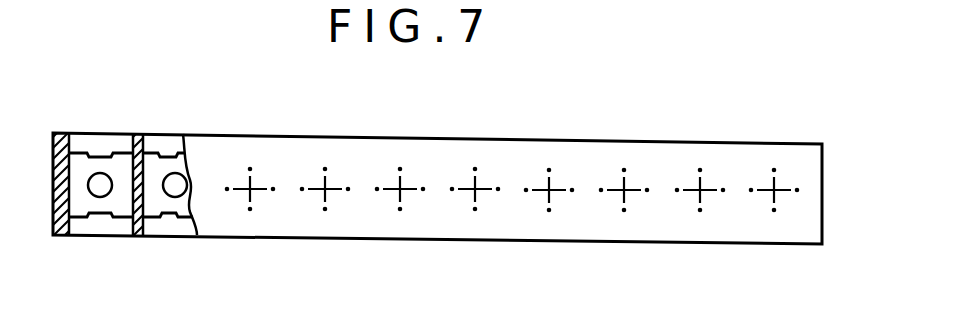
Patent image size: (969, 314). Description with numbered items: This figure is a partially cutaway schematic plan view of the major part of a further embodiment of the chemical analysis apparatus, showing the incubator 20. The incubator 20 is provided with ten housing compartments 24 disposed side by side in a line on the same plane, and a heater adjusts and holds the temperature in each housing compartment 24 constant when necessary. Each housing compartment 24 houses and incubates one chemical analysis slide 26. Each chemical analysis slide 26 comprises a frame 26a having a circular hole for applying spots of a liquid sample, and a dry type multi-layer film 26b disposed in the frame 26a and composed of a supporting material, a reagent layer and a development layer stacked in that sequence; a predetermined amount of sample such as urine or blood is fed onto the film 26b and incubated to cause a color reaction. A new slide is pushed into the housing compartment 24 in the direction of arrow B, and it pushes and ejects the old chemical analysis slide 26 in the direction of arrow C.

The incubator 20 is at (255, 125).
The housing compartment 24 is at (159, 145).
The chemical analysis slide 26 is at (85, 138).
The frame 26a is at (82, 212).
The dry type multi-layer film 26b is at (103, 185).
The arrow B is at (101, 118).
The arrow C is at (102, 280).